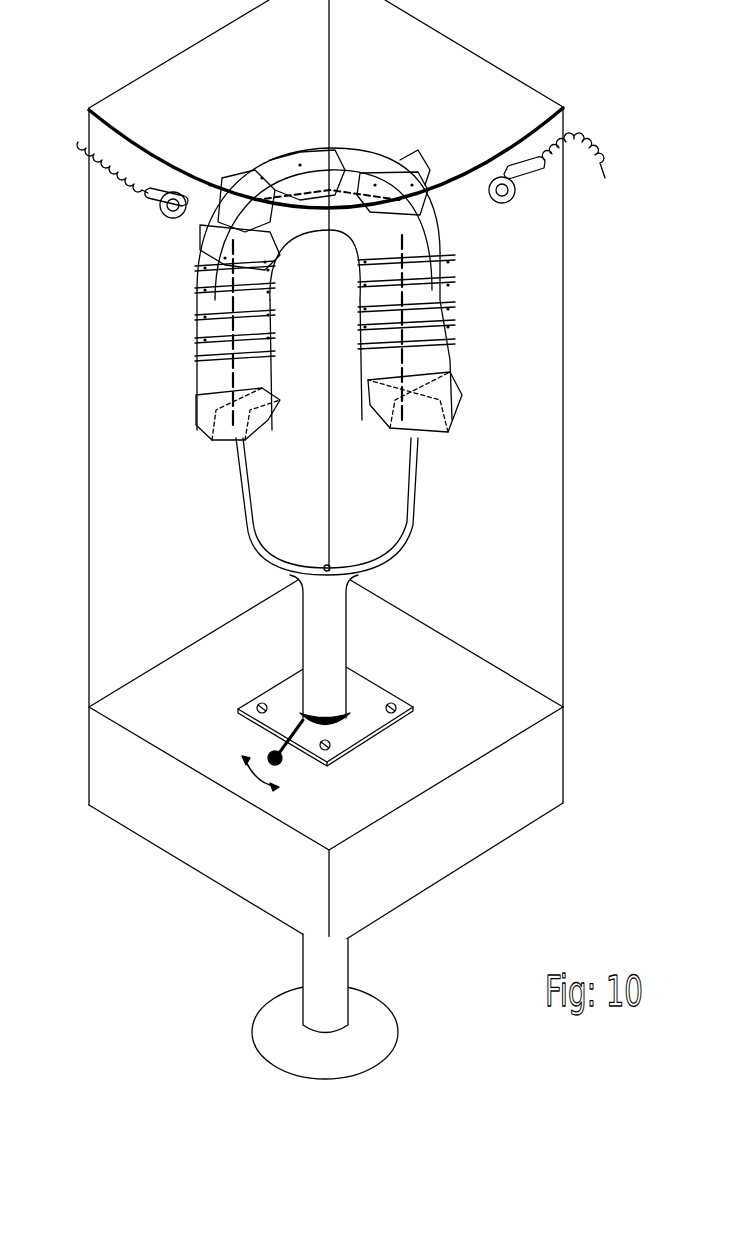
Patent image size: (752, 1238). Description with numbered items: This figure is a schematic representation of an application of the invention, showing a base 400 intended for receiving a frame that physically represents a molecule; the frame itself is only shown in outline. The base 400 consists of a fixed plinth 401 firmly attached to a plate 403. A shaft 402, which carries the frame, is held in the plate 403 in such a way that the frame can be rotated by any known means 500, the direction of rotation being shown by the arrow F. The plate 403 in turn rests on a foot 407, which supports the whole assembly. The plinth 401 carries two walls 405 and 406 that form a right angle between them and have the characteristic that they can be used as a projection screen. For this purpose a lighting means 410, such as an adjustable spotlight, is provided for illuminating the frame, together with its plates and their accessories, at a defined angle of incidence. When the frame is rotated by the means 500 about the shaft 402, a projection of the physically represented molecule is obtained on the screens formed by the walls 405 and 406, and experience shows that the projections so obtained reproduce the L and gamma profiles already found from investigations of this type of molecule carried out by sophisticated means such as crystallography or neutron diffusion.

The base 400 is at (540, 902).
The fixed plinth 401 is at (533, 778).
The shaft 402 is at (352, 585).
The plate 403 is at (370, 701).
The wall 405 is at (543, 472).
The wall 406 is at (97, 470).
The foot 407 is at (340, 979).
The lighting means 410 is at (180, 194).
The rotating means 500 is at (272, 751).